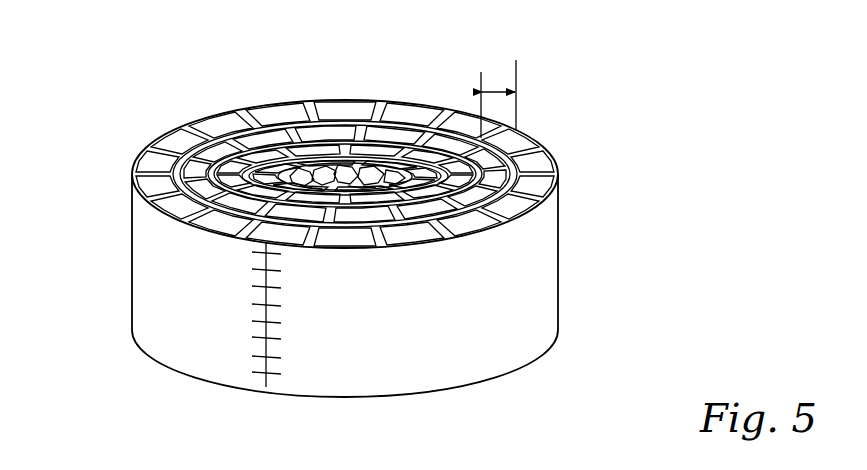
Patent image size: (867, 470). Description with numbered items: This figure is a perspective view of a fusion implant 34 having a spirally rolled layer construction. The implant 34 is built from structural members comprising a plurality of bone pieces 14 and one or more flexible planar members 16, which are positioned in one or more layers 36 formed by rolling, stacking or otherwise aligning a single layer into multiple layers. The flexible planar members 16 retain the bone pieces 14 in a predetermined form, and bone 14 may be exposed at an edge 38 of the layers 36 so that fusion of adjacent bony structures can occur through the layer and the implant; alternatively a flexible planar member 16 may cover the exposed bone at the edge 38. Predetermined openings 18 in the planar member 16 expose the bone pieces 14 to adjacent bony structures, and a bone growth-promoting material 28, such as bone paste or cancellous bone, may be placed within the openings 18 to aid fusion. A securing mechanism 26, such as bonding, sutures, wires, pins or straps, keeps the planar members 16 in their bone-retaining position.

The fusion implant 34 is at (108, 67).
The edge 38 is at (263, 120).
The predetermined openings 18 is at (352, 168).
The bone growth-promoting material 28 is at (375, 178).
The layers 36 is at (517, 80).
The bone pieces 14 is at (152, 190).
The flexible planar members 16 is at (176, 355).
The securing mechanism 26 is at (284, 367).